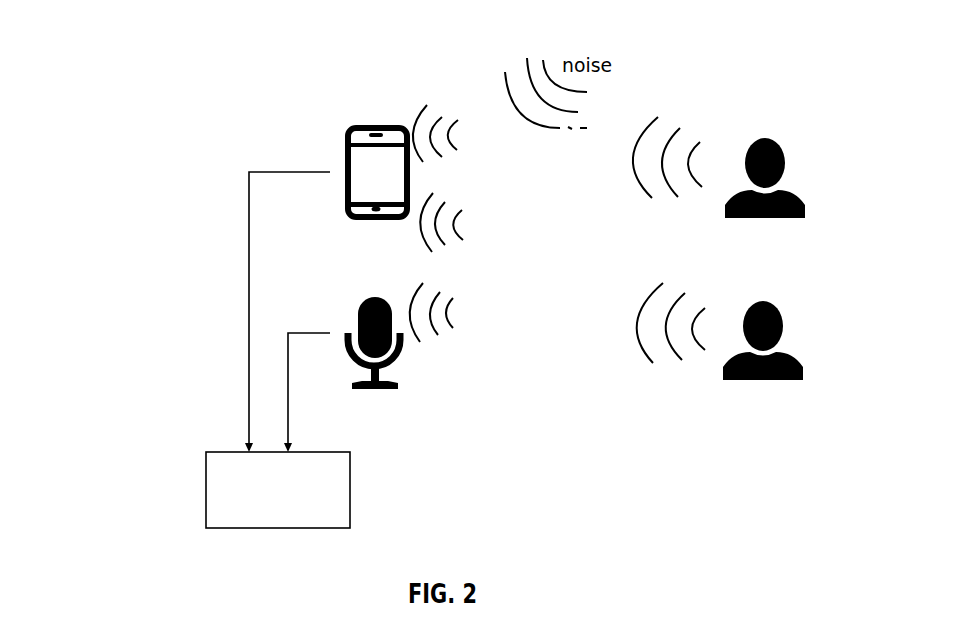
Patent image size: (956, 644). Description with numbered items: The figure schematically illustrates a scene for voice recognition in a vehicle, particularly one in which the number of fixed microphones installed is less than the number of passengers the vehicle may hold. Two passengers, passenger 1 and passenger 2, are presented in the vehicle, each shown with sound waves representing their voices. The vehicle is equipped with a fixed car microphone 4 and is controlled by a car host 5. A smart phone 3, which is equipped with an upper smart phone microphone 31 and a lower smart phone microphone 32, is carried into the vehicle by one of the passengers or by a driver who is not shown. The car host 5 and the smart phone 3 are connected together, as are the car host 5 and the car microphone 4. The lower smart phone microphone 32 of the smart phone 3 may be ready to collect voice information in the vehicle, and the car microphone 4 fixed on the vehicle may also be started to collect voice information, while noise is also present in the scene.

The passenger 1 is at (727, 183).
The passenger 2 is at (728, 350).
The smart phone 3 is at (410, 175).
The upper smart phone microphone 31 is at (372, 127).
The lower smart phone microphone 32 is at (377, 208).
The car microphone 4 is at (383, 355).
The car host 5 is at (278, 350).